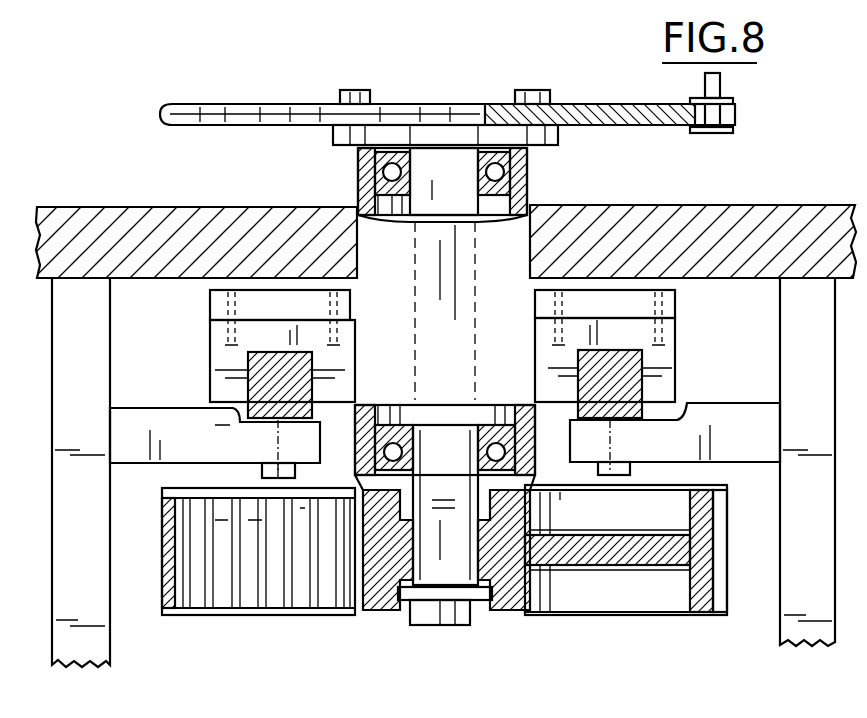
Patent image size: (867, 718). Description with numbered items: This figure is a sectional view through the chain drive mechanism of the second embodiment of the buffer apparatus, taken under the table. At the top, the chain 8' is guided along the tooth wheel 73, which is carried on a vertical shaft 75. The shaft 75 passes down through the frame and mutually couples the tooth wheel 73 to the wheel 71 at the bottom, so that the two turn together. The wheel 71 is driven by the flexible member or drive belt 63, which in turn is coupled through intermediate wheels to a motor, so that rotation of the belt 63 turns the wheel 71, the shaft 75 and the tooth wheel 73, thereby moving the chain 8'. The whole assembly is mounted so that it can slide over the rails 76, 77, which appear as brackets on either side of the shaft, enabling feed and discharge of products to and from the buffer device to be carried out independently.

The chain 8' is at (447, 130).
The tooth wheel 73 is at (712, 115).
The shaft 75 is at (448, 425).
The rail 77 is at (245, 362).
The rail 76 is at (625, 376).
The drive belt 63 is at (160, 580).
The wheel 71 is at (685, 590).